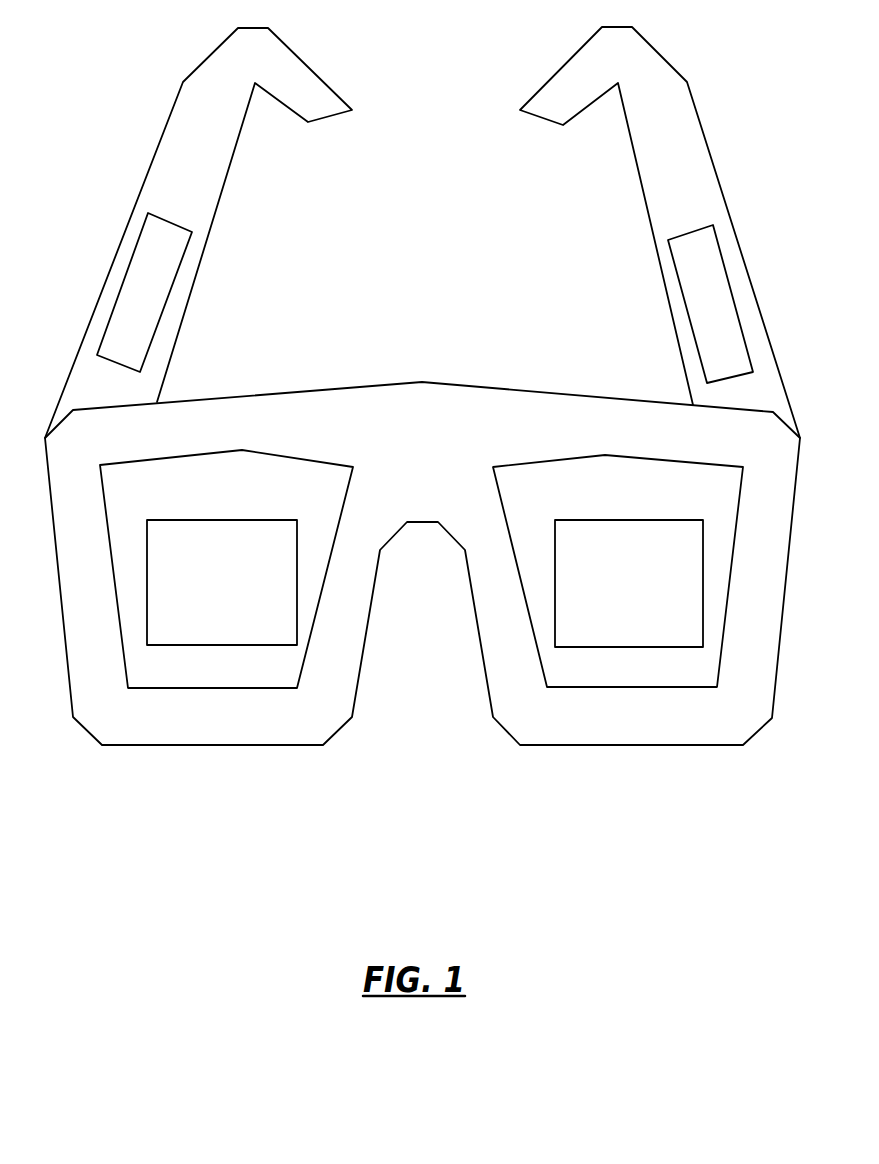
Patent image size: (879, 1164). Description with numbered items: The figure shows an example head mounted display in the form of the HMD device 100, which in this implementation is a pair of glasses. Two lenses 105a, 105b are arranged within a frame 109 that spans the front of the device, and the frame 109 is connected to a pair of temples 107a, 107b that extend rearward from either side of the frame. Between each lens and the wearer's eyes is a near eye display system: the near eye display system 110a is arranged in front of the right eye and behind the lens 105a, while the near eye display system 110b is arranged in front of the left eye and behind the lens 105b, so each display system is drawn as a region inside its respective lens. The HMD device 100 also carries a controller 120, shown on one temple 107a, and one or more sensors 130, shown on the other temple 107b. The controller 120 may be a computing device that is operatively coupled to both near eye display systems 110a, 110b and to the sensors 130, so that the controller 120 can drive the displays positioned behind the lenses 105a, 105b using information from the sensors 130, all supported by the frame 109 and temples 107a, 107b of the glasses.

The HMD device 100 is at (422, 441).
The temple 107a is at (198, 233).
The temple 107b is at (660, 232).
The controller 120 is at (144, 292).
The sensors 130 is at (710, 304).
The frame 109 is at (422, 563).
The lens 105a is at (226, 569).
The lens 105b is at (618, 571).
The near eye display system 110a is at (222, 582).
The near eye display system 110b is at (629, 583).